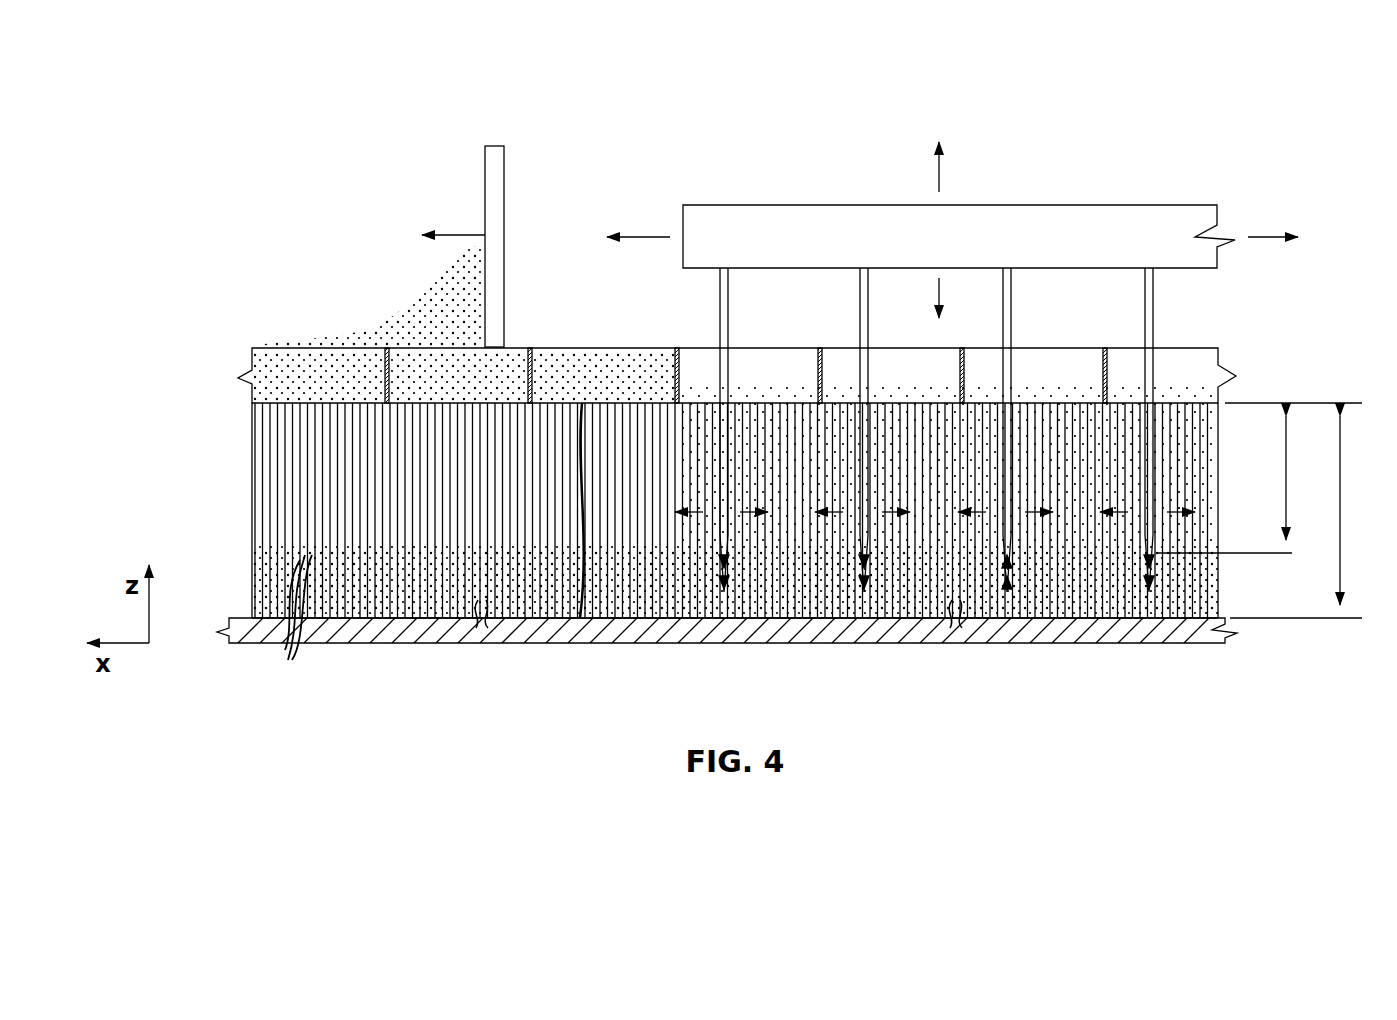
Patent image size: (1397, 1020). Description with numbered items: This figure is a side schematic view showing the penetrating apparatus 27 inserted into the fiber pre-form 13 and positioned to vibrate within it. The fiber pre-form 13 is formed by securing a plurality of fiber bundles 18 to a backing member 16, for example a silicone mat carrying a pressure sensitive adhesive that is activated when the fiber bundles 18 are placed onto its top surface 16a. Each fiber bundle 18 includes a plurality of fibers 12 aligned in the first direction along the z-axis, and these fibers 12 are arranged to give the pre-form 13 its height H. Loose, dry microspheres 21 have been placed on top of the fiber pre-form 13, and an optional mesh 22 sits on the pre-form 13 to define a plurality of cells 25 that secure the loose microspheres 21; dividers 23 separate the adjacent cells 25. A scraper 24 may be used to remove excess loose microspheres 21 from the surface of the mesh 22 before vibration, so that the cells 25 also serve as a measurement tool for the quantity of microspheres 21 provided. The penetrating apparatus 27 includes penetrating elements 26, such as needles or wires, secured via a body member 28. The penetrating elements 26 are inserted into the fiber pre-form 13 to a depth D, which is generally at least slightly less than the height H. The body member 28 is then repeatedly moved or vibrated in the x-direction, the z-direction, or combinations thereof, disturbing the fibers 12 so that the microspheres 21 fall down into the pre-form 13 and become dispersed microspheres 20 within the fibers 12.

The fibers 12 is at (1240, 513).
The fiber pre-form 13 is at (241, 440).
The backing member 16 is at (750, 630).
The top surface 16a is at (240, 612).
The fiber bundles 18 is at (252, 498).
The dispersed microspheres 20 is at (480, 628).
The loose microspheres 21 is at (377, 328).
The mesh 22 is at (1196, 357).
The divider 23 is at (797, 382).
The scraper 24 is at (505, 168).
The cells 25 is at (1187, 388).
The penetrating elements 26 is at (1153, 478).
The penetrating apparatus 27 is at (952, 365).
The body member 28 is at (805, 215).
The depth D is at (1290, 482).
The height H is at (1343, 522).